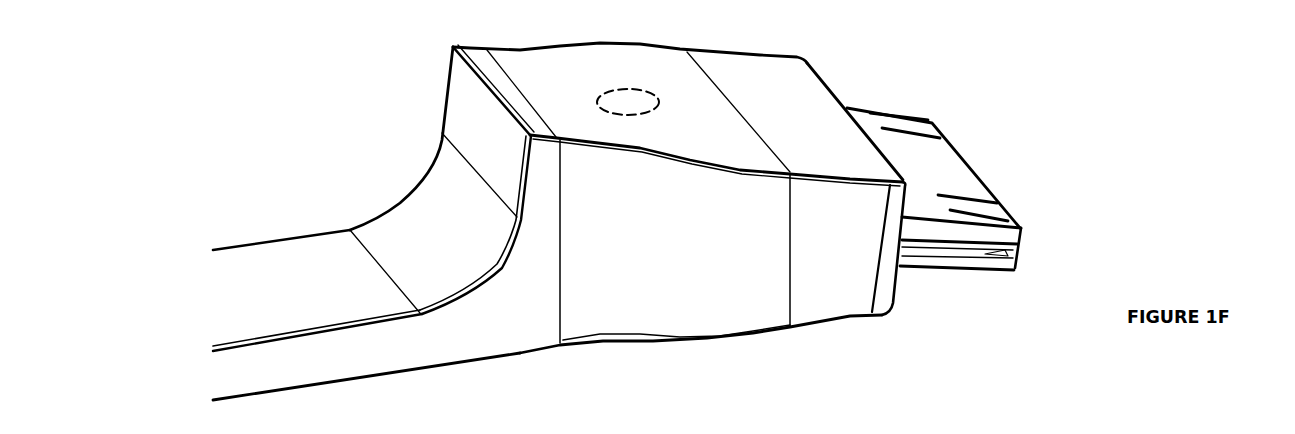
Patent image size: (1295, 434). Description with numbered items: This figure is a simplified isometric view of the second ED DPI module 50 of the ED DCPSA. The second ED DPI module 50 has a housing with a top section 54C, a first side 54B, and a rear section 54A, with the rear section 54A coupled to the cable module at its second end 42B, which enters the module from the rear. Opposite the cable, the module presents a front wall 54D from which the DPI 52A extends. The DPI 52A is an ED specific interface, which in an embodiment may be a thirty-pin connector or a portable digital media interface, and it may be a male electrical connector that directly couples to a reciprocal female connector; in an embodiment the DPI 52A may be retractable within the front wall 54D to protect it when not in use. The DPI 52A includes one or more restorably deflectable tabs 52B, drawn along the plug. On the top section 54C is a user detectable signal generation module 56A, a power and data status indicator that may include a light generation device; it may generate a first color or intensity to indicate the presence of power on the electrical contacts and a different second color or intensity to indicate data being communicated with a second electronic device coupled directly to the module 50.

The second ED DPI module 50 is at (619, 207).
The cable module second end 42B is at (257, 247).
The rear section 54A is at (413, 207).
The first side 54B is at (692, 332).
The top section 54C is at (667, 53).
The front wall 54D is at (830, 82).
The user detectable signal generation module 56A is at (628, 96).
The DPI 52A is at (975, 170).
The restorably deflectable tabs 52B is at (990, 262).